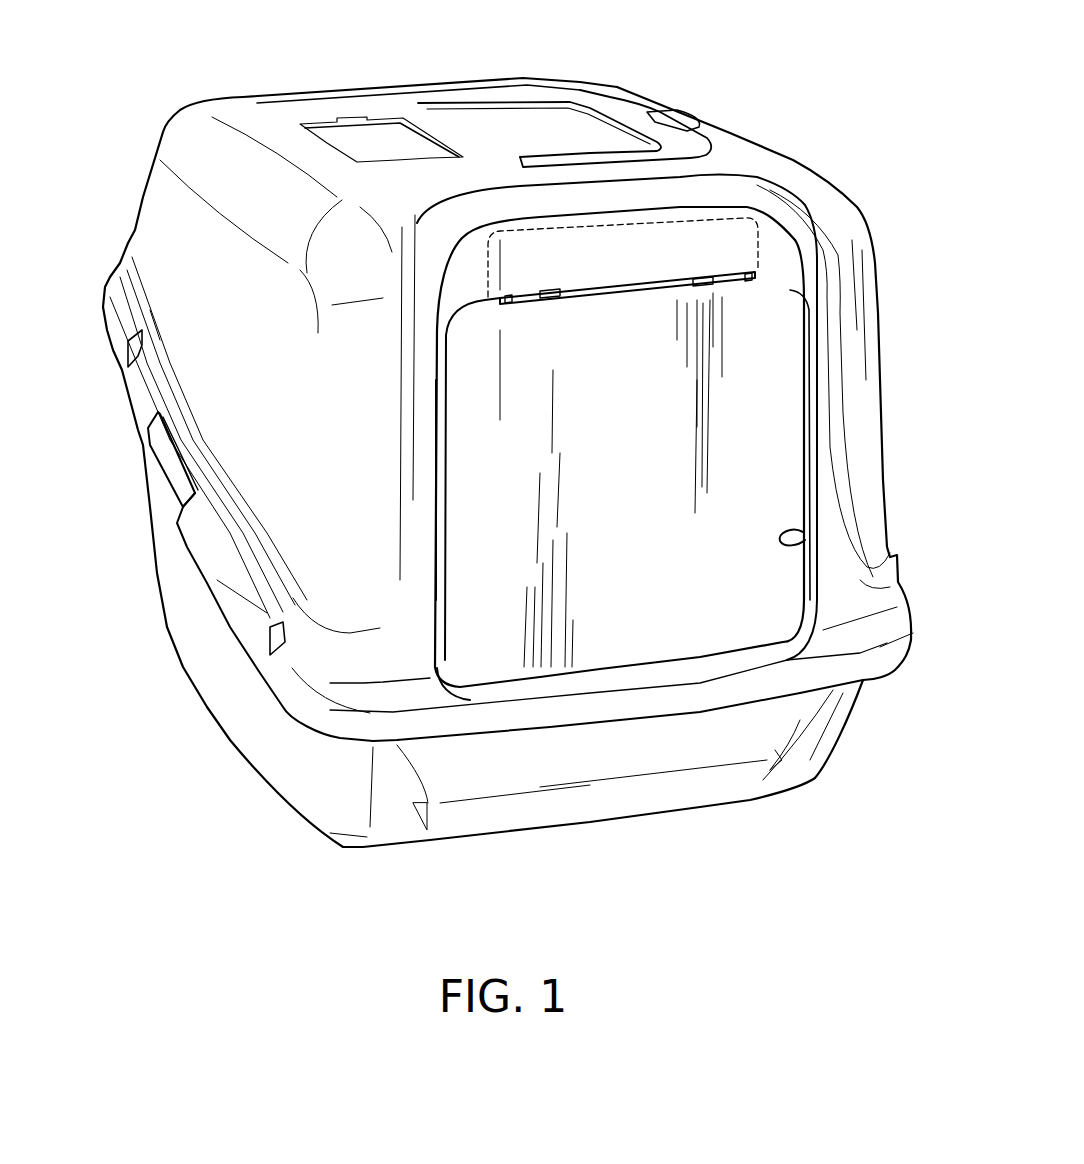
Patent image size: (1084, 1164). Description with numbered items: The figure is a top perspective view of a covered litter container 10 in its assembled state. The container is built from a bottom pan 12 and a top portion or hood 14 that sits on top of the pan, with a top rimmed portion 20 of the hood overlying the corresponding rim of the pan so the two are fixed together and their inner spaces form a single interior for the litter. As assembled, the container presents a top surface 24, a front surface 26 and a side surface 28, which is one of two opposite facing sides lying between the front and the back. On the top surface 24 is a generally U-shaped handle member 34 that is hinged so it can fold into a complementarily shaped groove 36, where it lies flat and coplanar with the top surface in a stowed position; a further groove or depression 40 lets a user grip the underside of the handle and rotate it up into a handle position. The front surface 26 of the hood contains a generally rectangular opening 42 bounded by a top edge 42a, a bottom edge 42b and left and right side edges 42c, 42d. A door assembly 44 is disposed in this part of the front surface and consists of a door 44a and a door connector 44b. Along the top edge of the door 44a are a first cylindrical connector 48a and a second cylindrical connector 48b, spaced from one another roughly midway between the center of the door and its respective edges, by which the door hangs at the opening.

The litter container 10 is at (822, 92).
The bottom pan 12 is at (283, 793).
The top portion 14 is at (860, 214).
The top rimmed portion 20 is at (120, 310).
The top surface 24 is at (265, 120).
The front surface 26 is at (835, 382).
The side surface 28 is at (233, 442).
The handle member 34 is at (613, 110).
The groove 36 is at (730, 135).
The groove or depression 40 is at (677, 118).
The opening 42 is at (810, 450).
The top edge 42a is at (615, 268).
The bottom edge 42b is at (602, 683).
The left side edge 42c is at (805, 537).
The right side edge 42d is at (437, 532).
The door assembly 44 is at (250, 310).
The door 44a is at (487, 443).
The door connector 44b is at (510, 266).
The first cylindrical connector 48a is at (733, 280).
The second cylindrical connector 48b is at (528, 307).